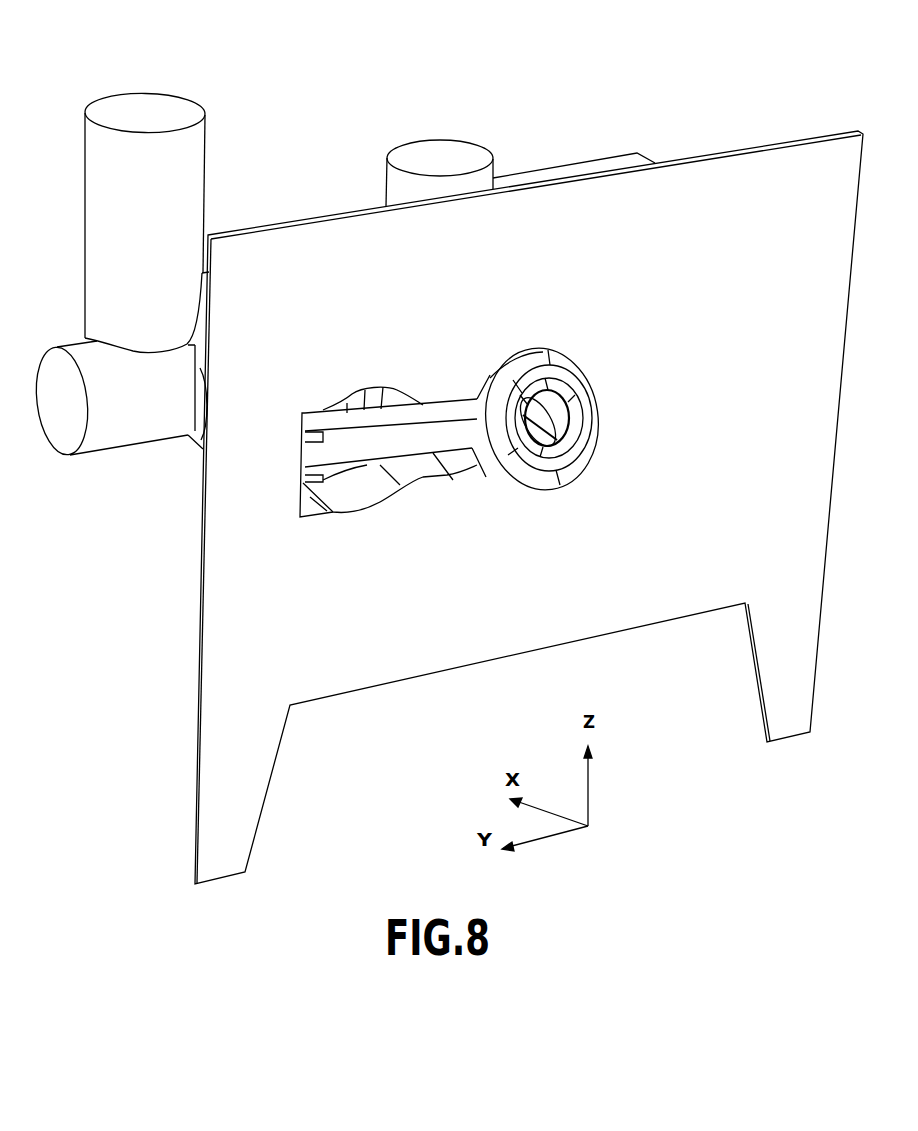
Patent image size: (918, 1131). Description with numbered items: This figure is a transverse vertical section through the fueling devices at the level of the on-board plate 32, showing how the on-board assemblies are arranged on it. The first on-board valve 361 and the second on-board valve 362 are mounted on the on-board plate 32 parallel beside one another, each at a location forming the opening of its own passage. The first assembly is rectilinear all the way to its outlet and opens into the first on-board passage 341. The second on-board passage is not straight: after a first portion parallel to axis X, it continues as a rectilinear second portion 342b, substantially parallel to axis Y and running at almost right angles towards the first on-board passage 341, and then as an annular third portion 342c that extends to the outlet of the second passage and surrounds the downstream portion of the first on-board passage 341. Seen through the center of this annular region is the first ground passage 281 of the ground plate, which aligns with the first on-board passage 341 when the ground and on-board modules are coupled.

The on-board plate 32 is at (774, 128).
The first on-board valve 361 is at (430, 153).
The second on-board valve 362 is at (120, 434).
The rectilinear second portion of the second on-board passage 342b is at (370, 445).
The annular third portion of the second on-board passage 342c is at (530, 474).
The first on-board passage 341 is at (550, 428).
The first ground passage 281 is at (565, 408).